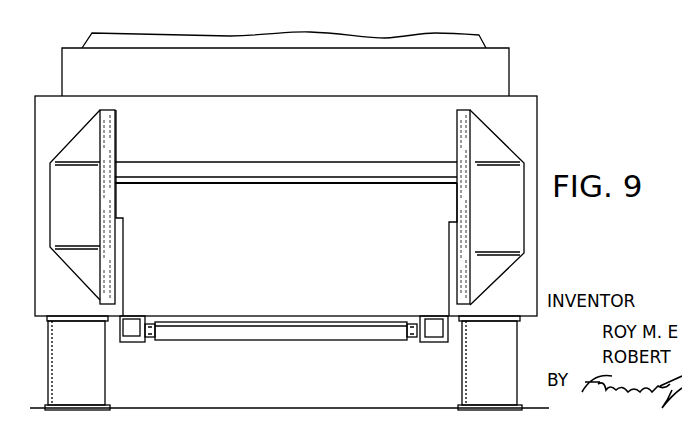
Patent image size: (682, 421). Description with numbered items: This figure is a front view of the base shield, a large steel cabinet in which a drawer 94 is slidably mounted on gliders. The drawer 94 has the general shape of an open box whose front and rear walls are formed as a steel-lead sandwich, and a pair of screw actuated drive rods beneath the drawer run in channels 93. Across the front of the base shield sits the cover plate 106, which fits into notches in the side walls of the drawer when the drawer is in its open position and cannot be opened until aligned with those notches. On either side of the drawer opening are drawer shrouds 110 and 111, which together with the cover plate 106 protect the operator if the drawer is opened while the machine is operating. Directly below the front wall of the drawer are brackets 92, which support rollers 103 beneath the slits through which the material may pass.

The bracket 92 is at (148, 340).
The channel 93 is at (120, 343).
The drawer 94 is at (312, 267).
The roller 103 is at (318, 340).
The cover plate 106 is at (241, 178).
The drawer shroud 110 is at (86, 216).
The drawer shroud 111 is at (508, 219).